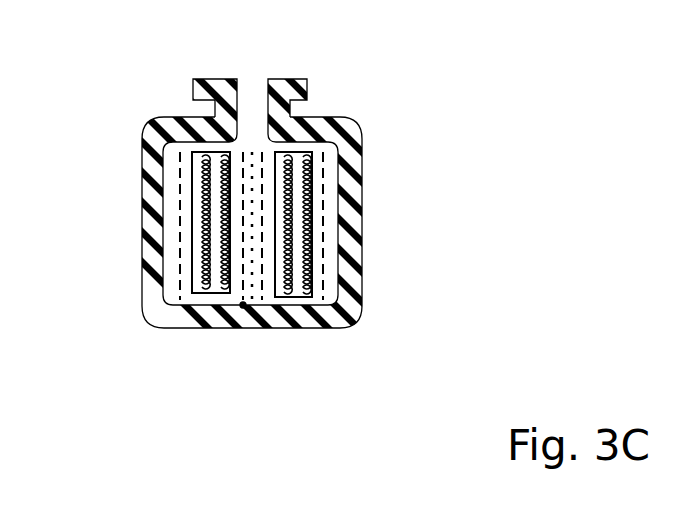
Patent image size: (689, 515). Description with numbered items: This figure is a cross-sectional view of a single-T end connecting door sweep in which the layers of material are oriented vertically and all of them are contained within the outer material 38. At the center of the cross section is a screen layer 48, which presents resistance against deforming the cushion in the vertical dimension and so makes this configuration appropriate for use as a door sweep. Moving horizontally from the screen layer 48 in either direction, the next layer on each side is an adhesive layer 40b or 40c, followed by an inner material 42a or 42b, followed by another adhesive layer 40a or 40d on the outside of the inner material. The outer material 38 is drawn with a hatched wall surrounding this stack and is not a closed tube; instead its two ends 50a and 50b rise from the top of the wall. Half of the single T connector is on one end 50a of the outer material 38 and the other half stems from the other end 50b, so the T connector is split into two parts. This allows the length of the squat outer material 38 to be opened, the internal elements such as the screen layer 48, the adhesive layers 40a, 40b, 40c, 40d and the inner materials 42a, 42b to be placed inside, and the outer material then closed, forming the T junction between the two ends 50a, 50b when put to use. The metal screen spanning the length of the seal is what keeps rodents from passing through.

The outer material 38 is at (348, 122).
The first end of outer material 50a is at (213, 79).
The second end of outer material 50b is at (290, 79).
The adhesive layer 40a is at (183, 222).
The adhesive layer 40b is at (243, 300).
The adhesive layer 40c is at (262, 300).
The adhesive layer 40d is at (323, 223).
The inner material 42a is at (200, 293).
The inner material 42b is at (307, 300).
The screen layer 48 is at (252, 300).